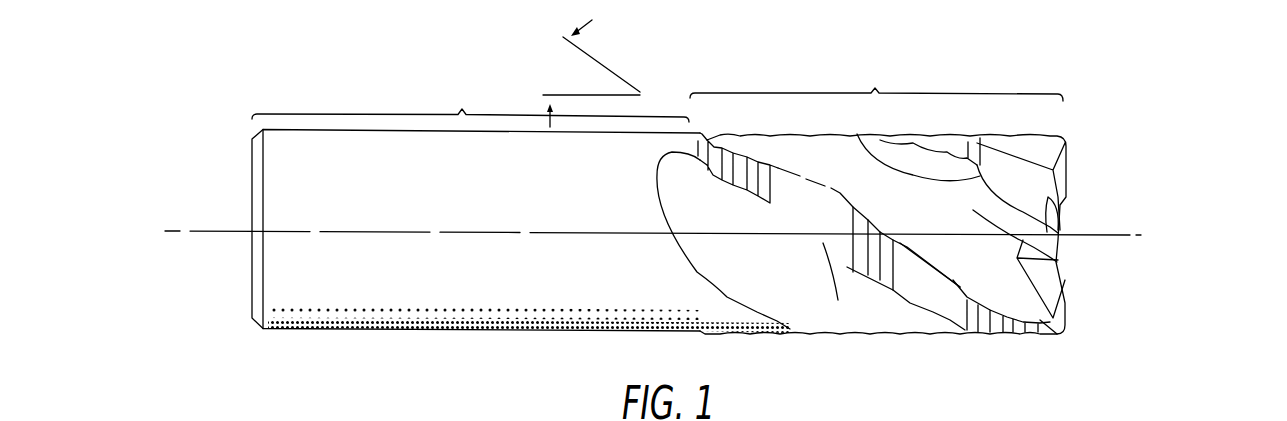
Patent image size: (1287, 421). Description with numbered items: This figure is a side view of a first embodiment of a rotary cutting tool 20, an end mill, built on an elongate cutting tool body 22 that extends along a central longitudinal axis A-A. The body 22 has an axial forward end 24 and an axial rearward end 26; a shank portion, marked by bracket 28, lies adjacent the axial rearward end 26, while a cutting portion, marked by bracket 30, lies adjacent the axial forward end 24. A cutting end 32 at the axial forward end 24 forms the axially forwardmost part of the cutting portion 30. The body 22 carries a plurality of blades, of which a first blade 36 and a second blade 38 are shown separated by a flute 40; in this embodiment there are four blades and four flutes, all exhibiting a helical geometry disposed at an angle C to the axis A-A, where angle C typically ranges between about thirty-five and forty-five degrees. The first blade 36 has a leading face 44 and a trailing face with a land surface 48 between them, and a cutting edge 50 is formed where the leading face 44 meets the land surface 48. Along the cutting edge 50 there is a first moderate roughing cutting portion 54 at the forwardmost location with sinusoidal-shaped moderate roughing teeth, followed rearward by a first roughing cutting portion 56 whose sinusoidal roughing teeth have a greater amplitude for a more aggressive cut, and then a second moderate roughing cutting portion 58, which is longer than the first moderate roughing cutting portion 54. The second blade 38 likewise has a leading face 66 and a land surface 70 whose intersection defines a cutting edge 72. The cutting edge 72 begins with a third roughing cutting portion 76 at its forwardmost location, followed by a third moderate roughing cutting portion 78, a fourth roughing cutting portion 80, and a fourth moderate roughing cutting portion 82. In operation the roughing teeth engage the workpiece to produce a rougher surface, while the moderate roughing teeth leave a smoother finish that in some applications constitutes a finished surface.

The rotary cutting tool 20 is at (1169, 142).
The elongate cutting tool body 22 is at (285, 170).
The axial forward end 24 is at (1068, 167).
The axial rearward end 26 is at (252, 148).
The shank portion 28 is at (470, 101).
The cutting portion 30 is at (878, 198).
The cutting end 32 is at (1063, 228).
The first blade 36 is at (1027, 152).
The second blade 38 is at (841, 276).
The flute 40 is at (803, 147).
The leading face 44 is at (1020, 240).
The land surface 48 is at (993, 148).
The cutting edge 50 is at (858, 134).
The first moderate roughing cutting portion 54 is at (1030, 183).
The first roughing cutting portion 56 is at (942, 145).
The second moderate roughing cutting portion 58 is at (908, 143).
The leading face 66 is at (817, 222).
The land surface 70 is at (958, 318).
The cutting edge 72 is at (778, 213).
The third roughing cutting portion 76 is at (1018, 327).
The third moderate roughing cutting portion 78 is at (932, 297).
The fourth roughing cutting portion 80 is at (872, 270).
The fourth moderate roughing cutting portion 82 is at (808, 240).
The central longitudinal axis A is at (653, 233).
The helix angle C is at (591, 73).